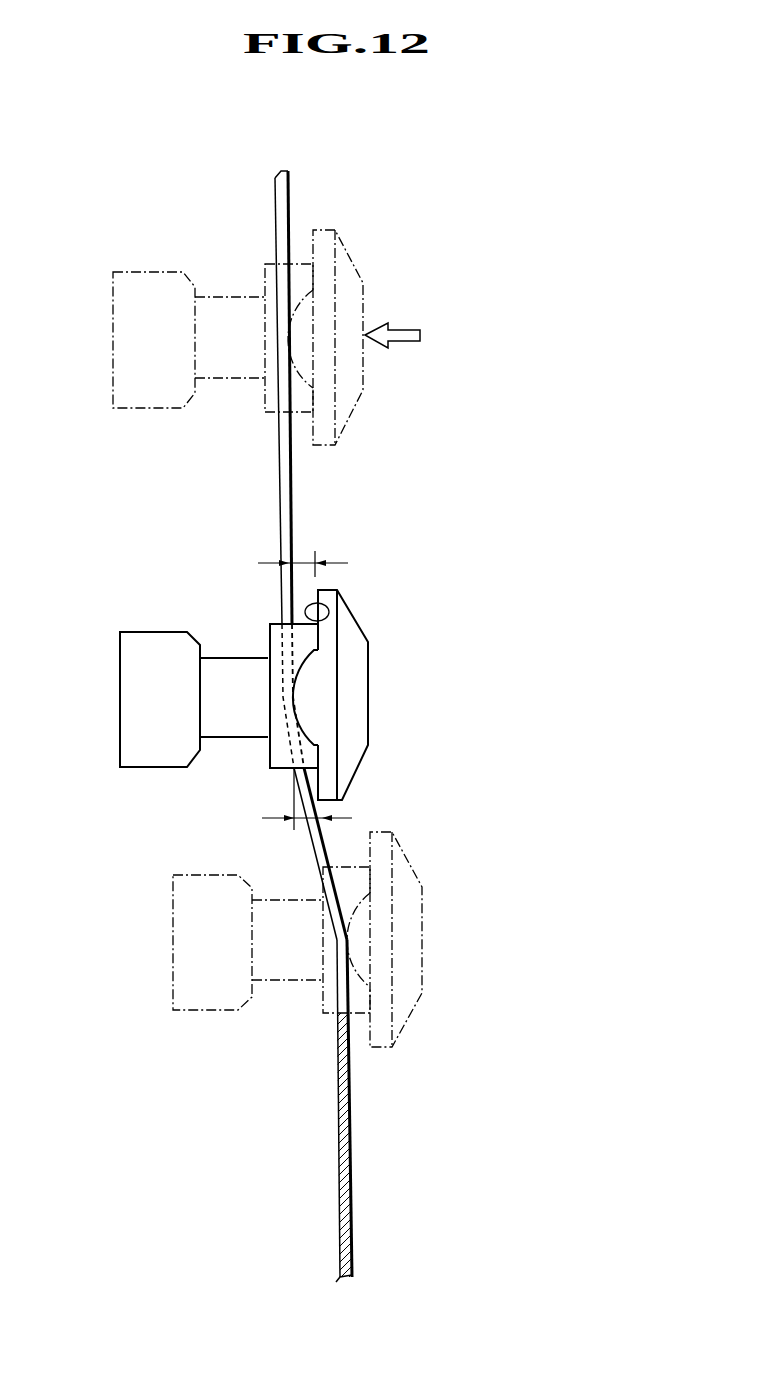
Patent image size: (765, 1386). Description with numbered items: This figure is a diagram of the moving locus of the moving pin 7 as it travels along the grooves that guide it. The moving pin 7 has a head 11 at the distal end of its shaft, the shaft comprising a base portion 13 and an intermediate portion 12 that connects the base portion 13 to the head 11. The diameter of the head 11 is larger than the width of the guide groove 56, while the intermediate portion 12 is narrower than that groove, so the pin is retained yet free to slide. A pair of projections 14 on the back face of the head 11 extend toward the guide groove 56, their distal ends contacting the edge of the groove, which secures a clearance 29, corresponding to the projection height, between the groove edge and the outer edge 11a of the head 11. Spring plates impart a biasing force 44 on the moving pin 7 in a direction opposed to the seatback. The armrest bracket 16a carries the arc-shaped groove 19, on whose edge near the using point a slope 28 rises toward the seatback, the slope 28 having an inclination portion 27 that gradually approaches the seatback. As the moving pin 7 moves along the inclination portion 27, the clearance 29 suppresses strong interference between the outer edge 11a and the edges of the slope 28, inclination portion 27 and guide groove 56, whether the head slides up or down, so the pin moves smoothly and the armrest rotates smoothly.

The moving pin 7 is at (372, 410).
The head 11 is at (356, 685).
The outer edge of the head 11a is at (329, 613).
The intermediate portion 12 is at (292, 768).
The base portion 13 is at (250, 740).
The projection 14 is at (296, 682).
The armrest bracket 16a is at (361, 1225).
The groove 19 is at (285, 463).
The guide groove 56 is at (283, 397).
The inclination portion 27 is at (323, 843).
The slope 28 is at (351, 1137).
The clearance 29 is at (303, 560).
The biasing force 44 is at (390, 326).